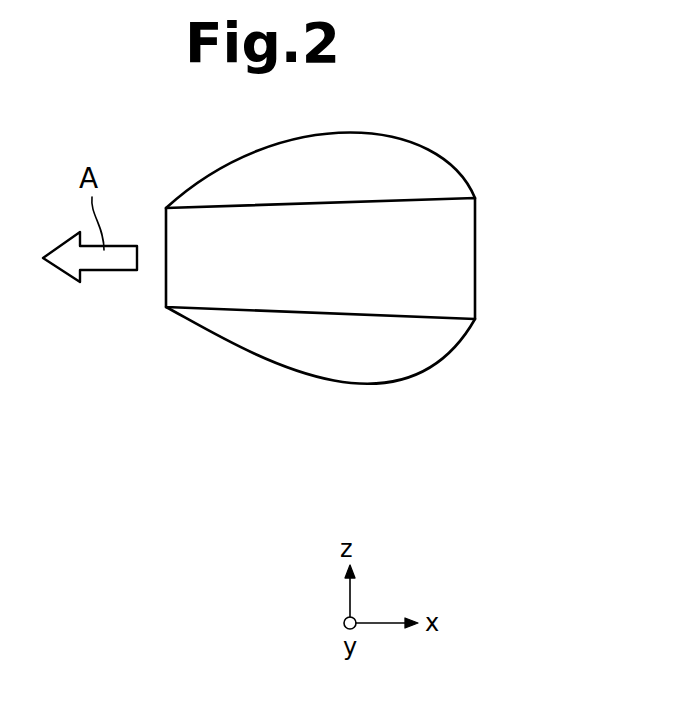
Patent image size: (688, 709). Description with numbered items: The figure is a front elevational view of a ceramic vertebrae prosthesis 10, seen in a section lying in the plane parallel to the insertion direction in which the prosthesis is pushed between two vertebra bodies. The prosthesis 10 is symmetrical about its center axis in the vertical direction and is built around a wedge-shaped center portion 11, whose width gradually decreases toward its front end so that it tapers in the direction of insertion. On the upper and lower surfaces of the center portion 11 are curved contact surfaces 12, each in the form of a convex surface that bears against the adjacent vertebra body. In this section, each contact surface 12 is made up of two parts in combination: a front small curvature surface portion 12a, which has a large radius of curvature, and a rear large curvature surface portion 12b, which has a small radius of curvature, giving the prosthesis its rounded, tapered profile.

The ceramic vertebrae prosthesis 10 is at (383, 318).
The center portion 11 is at (467, 245).
The contact surfaces 12 is at (320, 318).
The front small curvature surface portion 12a is at (260, 362).
The rear large curvature surface portion 12b is at (238, 448).